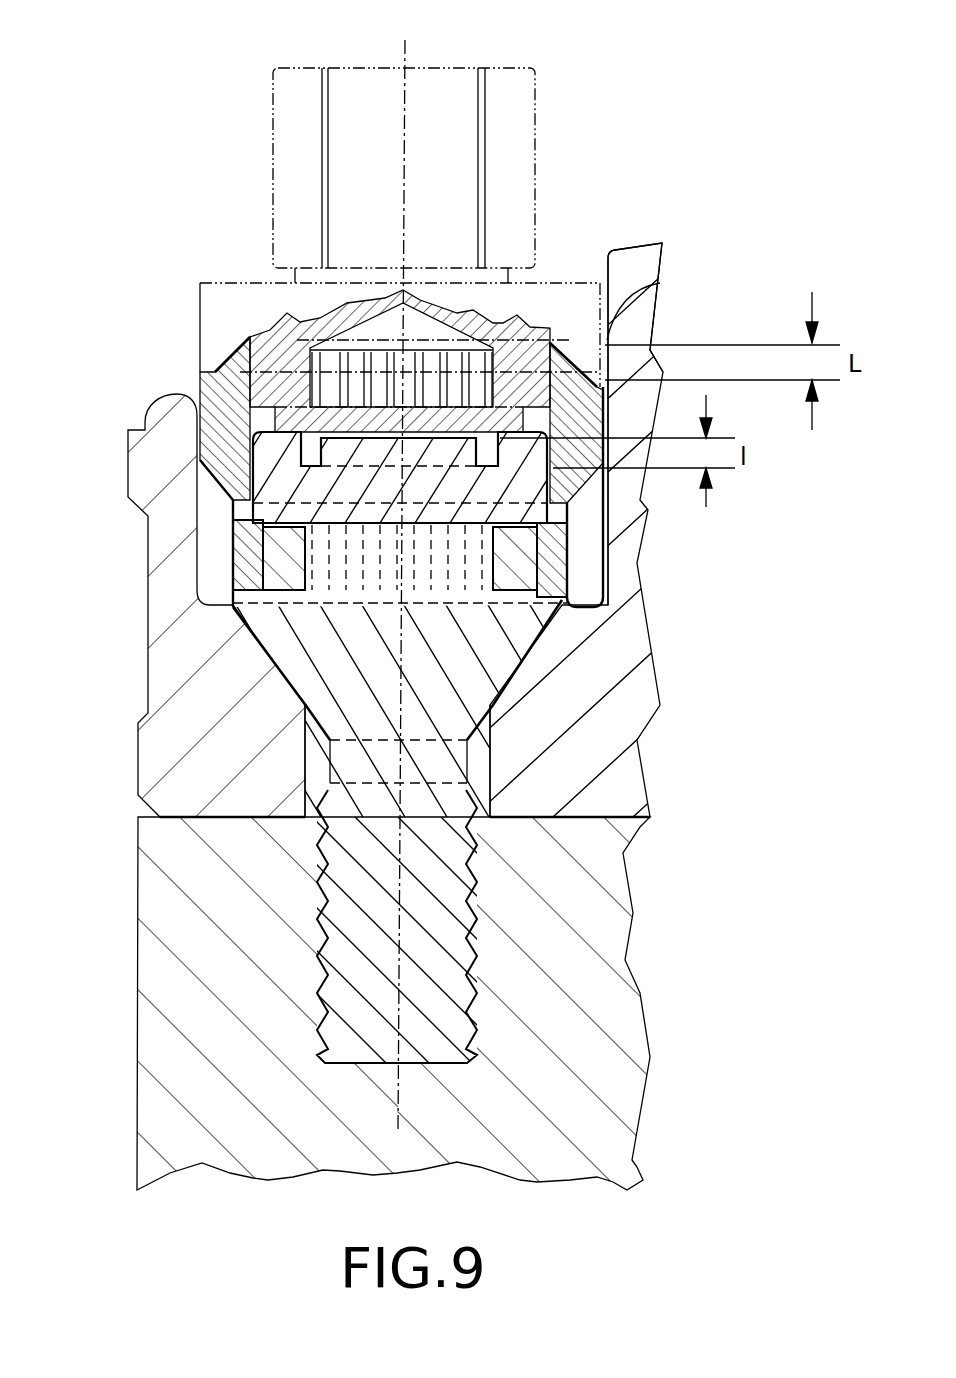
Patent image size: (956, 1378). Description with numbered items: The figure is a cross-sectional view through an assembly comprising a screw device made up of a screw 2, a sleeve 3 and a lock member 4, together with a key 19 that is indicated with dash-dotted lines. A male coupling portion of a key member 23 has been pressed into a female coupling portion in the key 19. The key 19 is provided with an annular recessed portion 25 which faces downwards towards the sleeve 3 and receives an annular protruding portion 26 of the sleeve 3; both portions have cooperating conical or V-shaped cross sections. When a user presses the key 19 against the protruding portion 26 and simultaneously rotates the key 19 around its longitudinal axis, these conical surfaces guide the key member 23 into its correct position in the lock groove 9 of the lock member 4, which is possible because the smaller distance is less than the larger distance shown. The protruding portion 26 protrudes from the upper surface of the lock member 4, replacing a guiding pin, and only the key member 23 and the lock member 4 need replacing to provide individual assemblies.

The key 19 is at (563, 90).
The annular recessed portion 25 is at (240, 332).
The key member 23 is at (533, 427).
The annular protruding portion 26 is at (660, 283).
The sleeve 3 is at (175, 377).
The lock member 4 is at (244, 500).
The lock groove 9 is at (470, 487).
The screw 2 is at (285, 693).